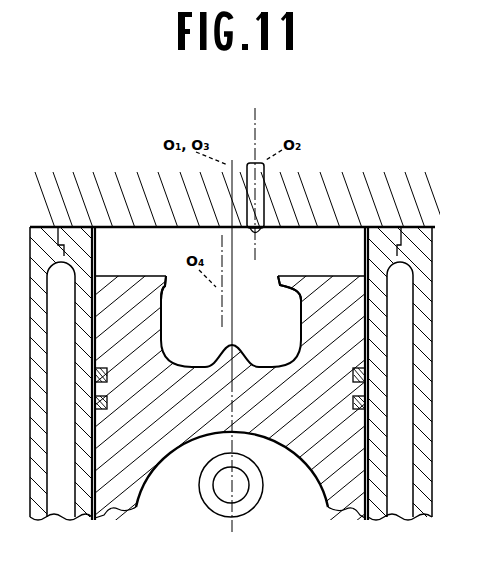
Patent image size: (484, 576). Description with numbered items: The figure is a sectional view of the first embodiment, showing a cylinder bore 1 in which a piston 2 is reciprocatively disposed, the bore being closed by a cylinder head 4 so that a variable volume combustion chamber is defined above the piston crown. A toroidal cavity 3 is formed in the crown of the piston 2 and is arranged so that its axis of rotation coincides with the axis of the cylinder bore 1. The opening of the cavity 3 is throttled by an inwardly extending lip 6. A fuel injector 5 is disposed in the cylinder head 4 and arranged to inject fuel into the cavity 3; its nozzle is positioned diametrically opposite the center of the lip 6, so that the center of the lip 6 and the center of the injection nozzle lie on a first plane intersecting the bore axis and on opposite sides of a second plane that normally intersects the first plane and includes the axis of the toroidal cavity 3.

The cylinder bore 1 is at (368, 247).
The piston 2 is at (131, 285).
The toroidal cavity 3 is at (281, 345).
The cylinder head 4 is at (107, 202).
The fuel injector 5 is at (254, 162).
The inwardly extending lip 6 is at (167, 278).